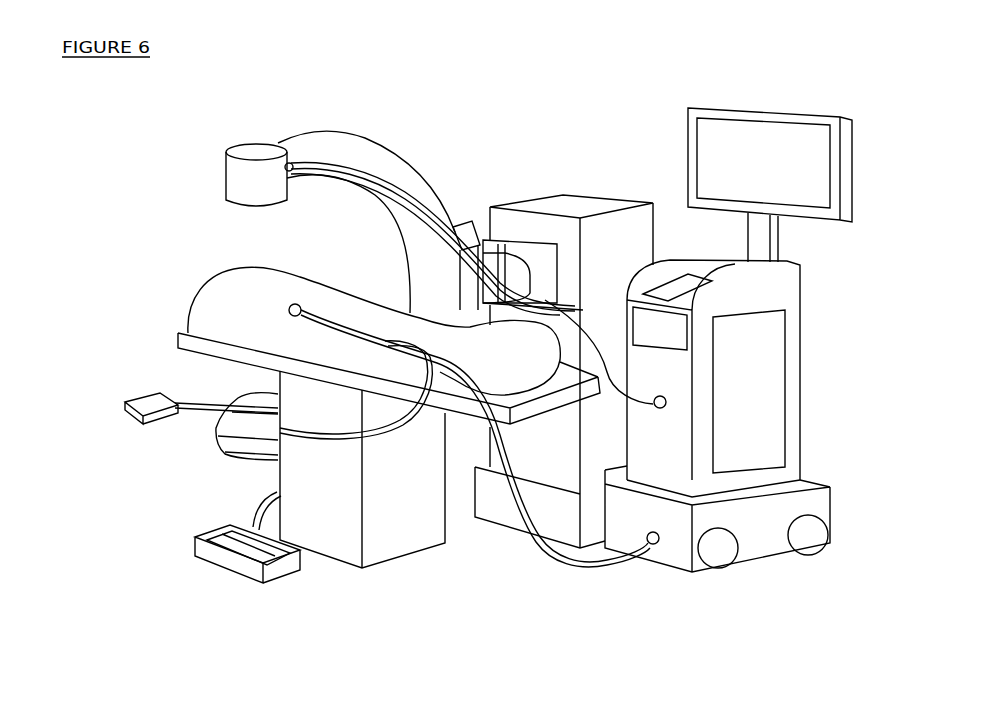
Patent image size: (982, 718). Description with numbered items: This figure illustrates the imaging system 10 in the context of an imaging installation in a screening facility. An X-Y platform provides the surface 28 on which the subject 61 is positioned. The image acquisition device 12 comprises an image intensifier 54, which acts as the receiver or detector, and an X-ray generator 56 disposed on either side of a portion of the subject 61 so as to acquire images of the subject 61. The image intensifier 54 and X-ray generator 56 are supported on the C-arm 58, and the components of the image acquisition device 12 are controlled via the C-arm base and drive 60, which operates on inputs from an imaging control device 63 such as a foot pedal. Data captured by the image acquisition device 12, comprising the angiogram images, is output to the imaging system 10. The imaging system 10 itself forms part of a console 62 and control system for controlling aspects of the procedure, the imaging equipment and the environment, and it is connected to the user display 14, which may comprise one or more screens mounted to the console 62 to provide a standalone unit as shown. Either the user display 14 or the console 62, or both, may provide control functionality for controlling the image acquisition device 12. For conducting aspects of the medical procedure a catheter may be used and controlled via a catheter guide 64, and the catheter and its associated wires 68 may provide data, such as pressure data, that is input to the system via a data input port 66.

The imaging system 10 is at (755, 467).
The image acquisition device 12 is at (277, 117).
The user display 14 is at (813, 222).
The surface 28 is at (173, 338).
The image intensifier 54 is at (224, 180).
The X-ray generator 56 is at (213, 440).
The C-arm 58 is at (367, 150).
The C-arm base and drive 60 is at (552, 198).
The subject 61 is at (472, 362).
The console 62 is at (773, 376).
The imaging control device 63 is at (240, 567).
The catheter guide 64 is at (140, 397).
The data input port 66 is at (596, 565).
The wires 68 is at (395, 432).